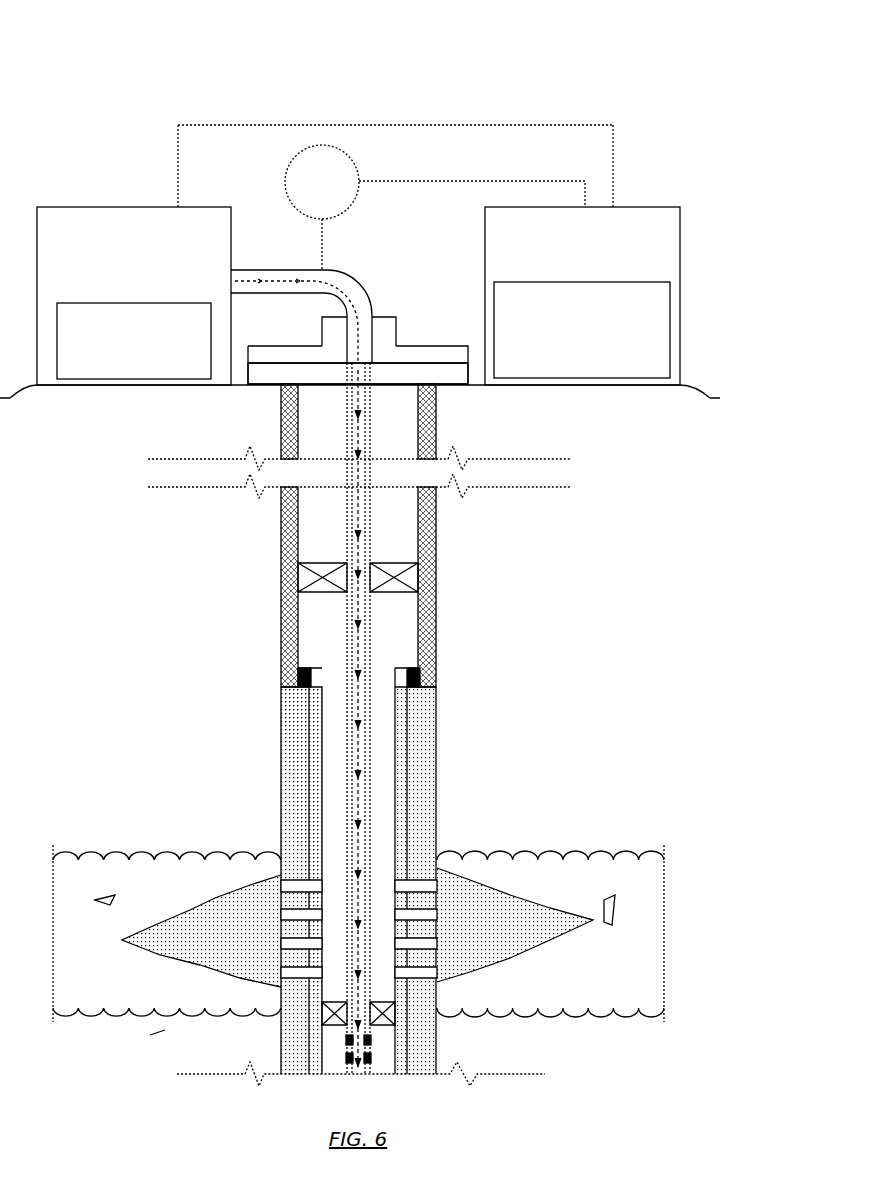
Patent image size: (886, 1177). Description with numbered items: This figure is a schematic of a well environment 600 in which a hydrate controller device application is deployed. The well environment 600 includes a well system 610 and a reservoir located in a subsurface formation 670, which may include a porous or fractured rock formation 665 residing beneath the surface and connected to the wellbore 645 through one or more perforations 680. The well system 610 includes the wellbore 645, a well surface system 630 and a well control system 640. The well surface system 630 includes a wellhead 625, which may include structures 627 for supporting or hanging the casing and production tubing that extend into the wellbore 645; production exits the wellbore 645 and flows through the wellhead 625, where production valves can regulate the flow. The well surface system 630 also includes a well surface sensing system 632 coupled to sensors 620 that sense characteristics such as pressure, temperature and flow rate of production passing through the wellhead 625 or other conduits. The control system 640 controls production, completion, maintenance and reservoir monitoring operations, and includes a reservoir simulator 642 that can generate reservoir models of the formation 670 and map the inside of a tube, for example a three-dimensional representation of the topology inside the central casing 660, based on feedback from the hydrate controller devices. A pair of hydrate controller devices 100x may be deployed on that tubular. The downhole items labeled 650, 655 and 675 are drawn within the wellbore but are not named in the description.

The well environment 600 is at (490, 87).
The well system 610 is at (231, 118).
The sensors 620 is at (435, 182).
The wellhead 625 is at (422, 332).
The structures 627 is at (395, 355).
The well surface system 630 is at (134, 296).
The well surface sensing system 632 is at (134, 341).
The well control system 640 is at (238, 541).
The reservoir simulator 642 is at (582, 330).
The wellbore 645 is at (420, 542).
The liner hanger 650 is at (305, 665).
The annulus 655 is at (395, 613).
The central casing 660 is at (368, 703).
The porous or fractured rock formation 665 is at (220, 915).
The subsurface formation 670 is at (602, 882).
The lower packer 675 is at (322, 1010).
The perforations 680 is at (442, 977).
The hydrate controller device 100x is at (371, 1062).